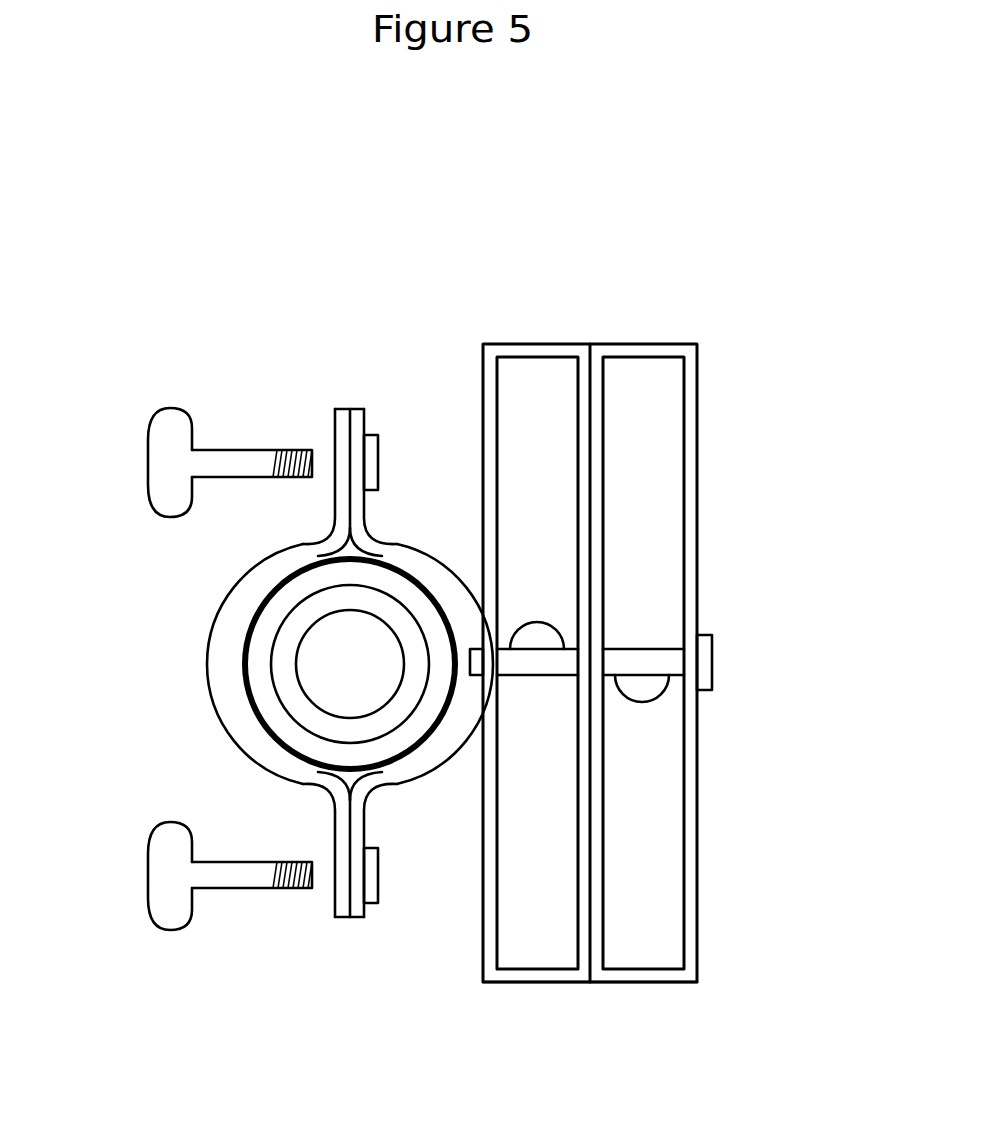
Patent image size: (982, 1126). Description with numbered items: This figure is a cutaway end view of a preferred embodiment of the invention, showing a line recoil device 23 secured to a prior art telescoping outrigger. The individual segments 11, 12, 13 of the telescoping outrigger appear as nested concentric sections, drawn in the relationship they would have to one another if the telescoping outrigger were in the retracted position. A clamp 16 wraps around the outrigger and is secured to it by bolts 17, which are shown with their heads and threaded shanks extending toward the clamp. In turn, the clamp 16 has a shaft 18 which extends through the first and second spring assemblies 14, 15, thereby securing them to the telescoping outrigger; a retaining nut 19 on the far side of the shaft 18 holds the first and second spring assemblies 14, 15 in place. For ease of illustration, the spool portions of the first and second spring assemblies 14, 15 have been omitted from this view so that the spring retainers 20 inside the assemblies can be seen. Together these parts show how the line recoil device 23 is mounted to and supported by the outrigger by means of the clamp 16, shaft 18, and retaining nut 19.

The segment 11 is at (311, 706).
The segment 12 is at (271, 675).
The segment 13 is at (246, 637).
The first spring assembly 14 is at (657, 343).
The second spring assembly 15 is at (524, 983).
The clamp 16 is at (350, 408).
The bolts 17 is at (148, 440).
The shaft 18 is at (476, 668).
The retaining nut 19 is at (710, 676).
The spring retainers 20 is at (537, 633).
The line recoil device 23 is at (742, 312).